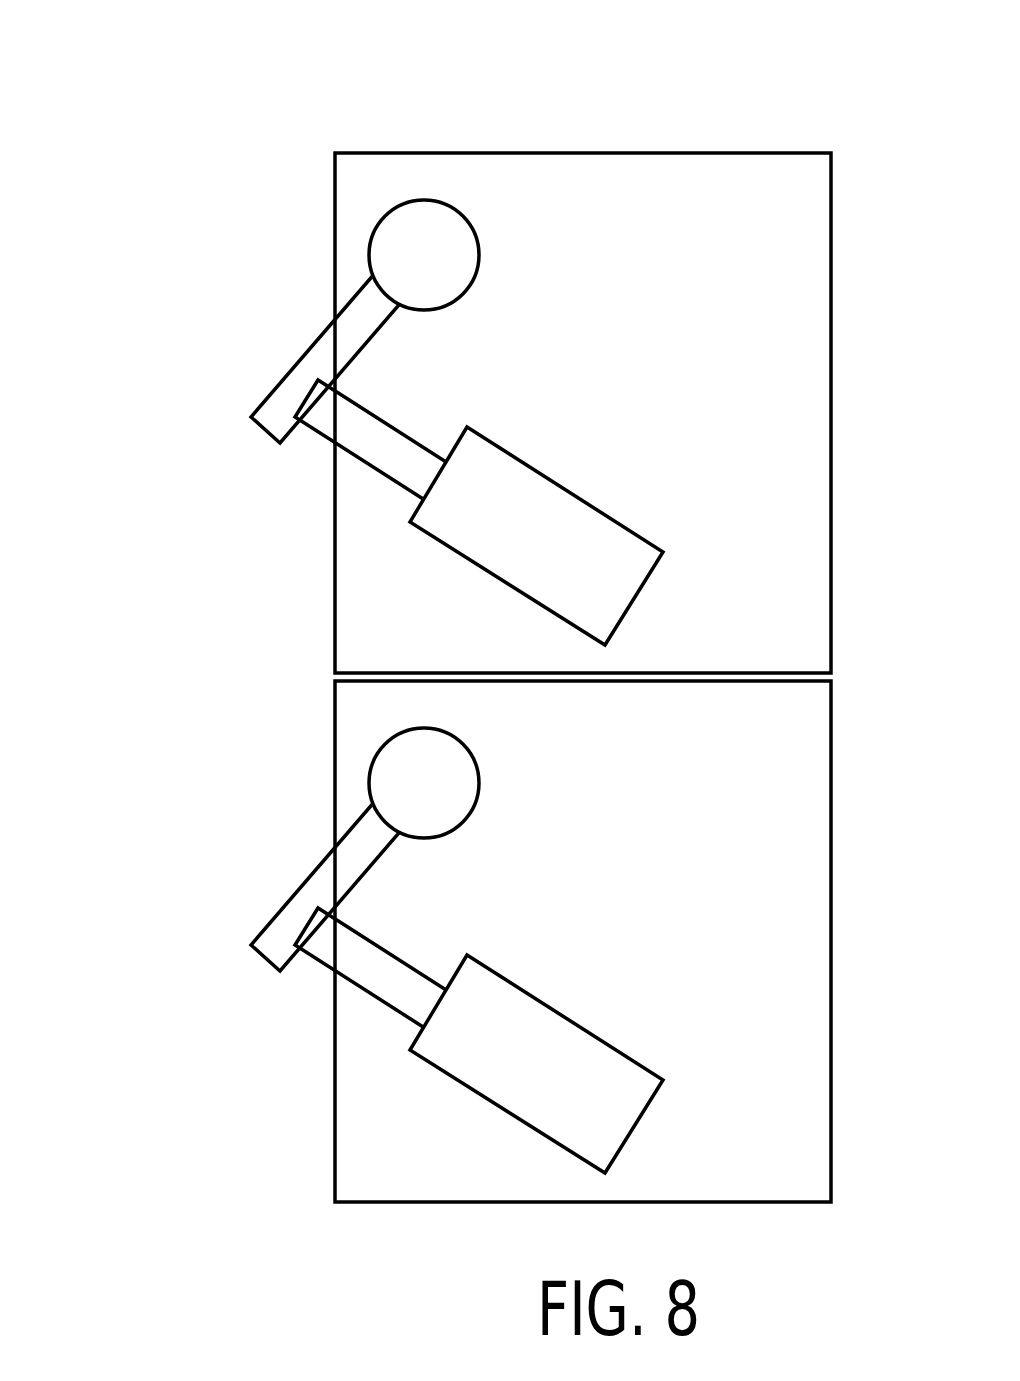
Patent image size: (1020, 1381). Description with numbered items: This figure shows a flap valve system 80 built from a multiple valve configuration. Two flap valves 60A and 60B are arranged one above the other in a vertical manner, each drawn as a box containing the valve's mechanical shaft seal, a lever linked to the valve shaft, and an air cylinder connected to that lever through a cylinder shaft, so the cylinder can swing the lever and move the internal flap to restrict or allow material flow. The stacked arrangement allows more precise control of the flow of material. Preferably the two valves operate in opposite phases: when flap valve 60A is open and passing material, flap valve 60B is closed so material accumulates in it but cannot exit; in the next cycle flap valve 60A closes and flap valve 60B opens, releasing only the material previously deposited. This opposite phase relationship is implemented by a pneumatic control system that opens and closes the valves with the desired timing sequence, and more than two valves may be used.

The flap valve system 80 is at (623, 100).
The flap valve 60A is at (372, 422).
The flap valve 60B is at (361, 950).